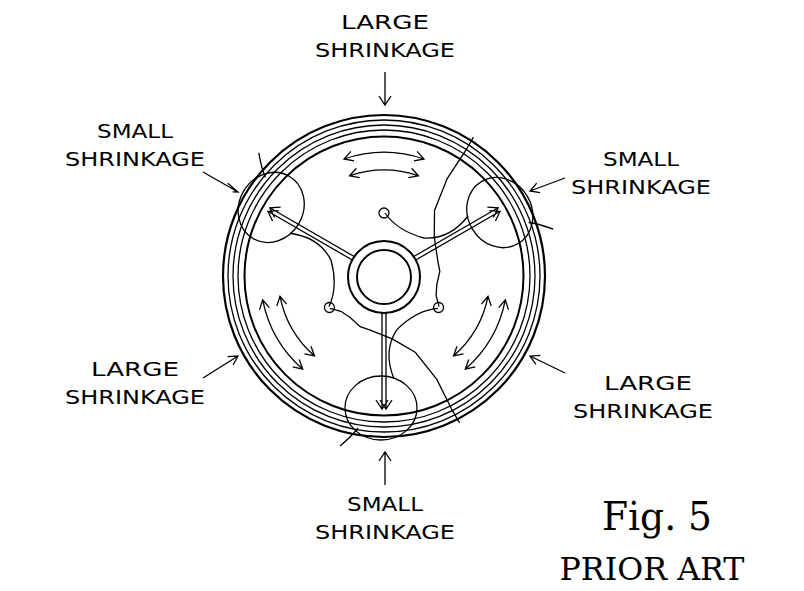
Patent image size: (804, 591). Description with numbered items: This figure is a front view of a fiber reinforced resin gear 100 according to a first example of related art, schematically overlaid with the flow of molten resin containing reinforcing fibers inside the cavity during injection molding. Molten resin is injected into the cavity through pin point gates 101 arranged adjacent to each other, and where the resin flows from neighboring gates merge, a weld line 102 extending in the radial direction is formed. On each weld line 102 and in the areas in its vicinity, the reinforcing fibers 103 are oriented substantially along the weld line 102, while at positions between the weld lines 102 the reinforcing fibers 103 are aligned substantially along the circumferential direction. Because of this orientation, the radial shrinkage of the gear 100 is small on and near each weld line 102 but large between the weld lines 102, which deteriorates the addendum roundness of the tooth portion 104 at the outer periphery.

The fiber reinforced resin gear 100 is at (485, 122).
The pin point gates 101 is at (361, 274).
The weld line 102 is at (394, 323).
The reinforcing fibers 103 is at (391, 238).
The tooth portion 104 is at (425, 276).